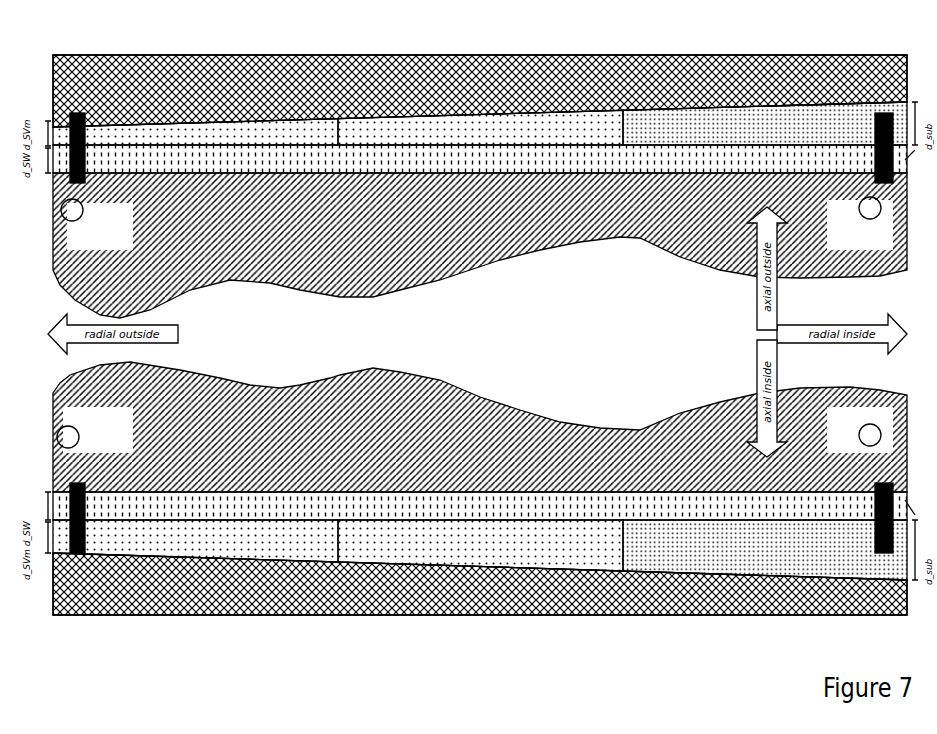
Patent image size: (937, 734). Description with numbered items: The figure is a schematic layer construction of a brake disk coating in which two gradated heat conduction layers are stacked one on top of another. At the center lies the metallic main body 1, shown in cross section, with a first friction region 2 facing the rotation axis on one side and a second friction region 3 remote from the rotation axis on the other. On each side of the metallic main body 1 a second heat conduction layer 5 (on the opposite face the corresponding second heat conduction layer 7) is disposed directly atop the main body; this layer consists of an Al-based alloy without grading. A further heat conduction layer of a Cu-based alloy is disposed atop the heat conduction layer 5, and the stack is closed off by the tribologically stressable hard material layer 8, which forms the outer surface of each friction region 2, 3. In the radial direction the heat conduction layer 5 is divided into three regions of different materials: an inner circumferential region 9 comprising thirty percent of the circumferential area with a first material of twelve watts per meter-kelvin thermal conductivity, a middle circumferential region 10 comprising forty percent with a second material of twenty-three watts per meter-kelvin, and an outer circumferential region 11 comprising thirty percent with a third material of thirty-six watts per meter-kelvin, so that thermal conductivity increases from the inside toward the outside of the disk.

The metallic main body 1 is at (531, 185).
The first friction region 2 is at (864, 618).
The second friction region 3 is at (858, 56).
The second heat conduction layer 5 is at (475, 508).
The second heat conduction layer remote from a rotating axis 7 is at (457, 160).
The tribologically stressable hard material layer 8 is at (532, 72).
The inner circumferential region 9 is at (736, 122).
The middle circumferential region 10 is at (503, 127).
The outer circumferential region 11 is at (238, 129).